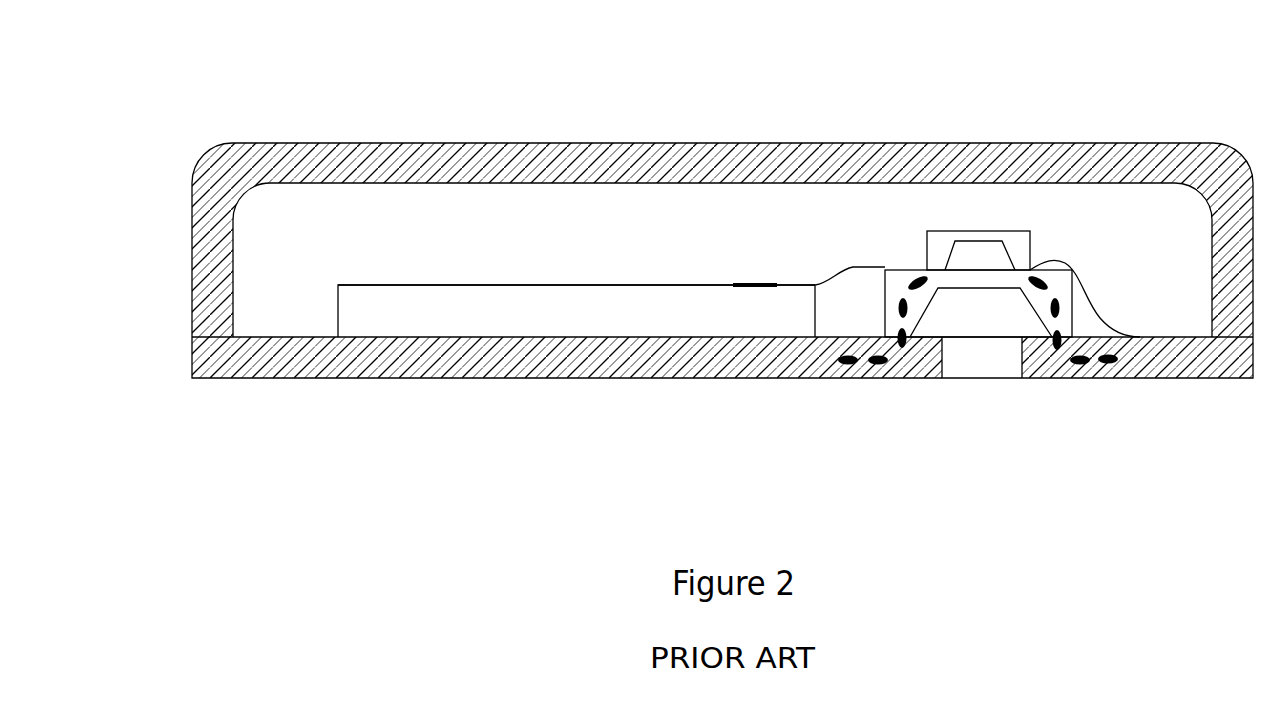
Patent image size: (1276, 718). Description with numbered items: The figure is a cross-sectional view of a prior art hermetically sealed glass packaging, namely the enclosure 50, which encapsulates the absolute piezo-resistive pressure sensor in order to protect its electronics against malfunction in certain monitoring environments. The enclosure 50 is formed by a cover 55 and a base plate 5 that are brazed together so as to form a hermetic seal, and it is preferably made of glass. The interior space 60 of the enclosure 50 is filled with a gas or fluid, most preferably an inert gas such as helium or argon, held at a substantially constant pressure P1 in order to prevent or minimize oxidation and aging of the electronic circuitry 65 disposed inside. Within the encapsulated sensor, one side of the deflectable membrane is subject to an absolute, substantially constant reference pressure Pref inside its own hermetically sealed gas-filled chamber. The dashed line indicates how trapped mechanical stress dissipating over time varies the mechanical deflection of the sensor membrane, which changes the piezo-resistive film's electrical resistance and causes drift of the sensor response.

The base plate 5 is at (365, 378).
The enclosure 50 is at (173, 287).
The cover 55 is at (370, 143).
The internal cavity 60 is at (333, 217).
The electronic circuitry 65 is at (532, 312).
The substantially constant pressure P1 is at (576, 254).
The reference pressure Pref is at (973, 253).